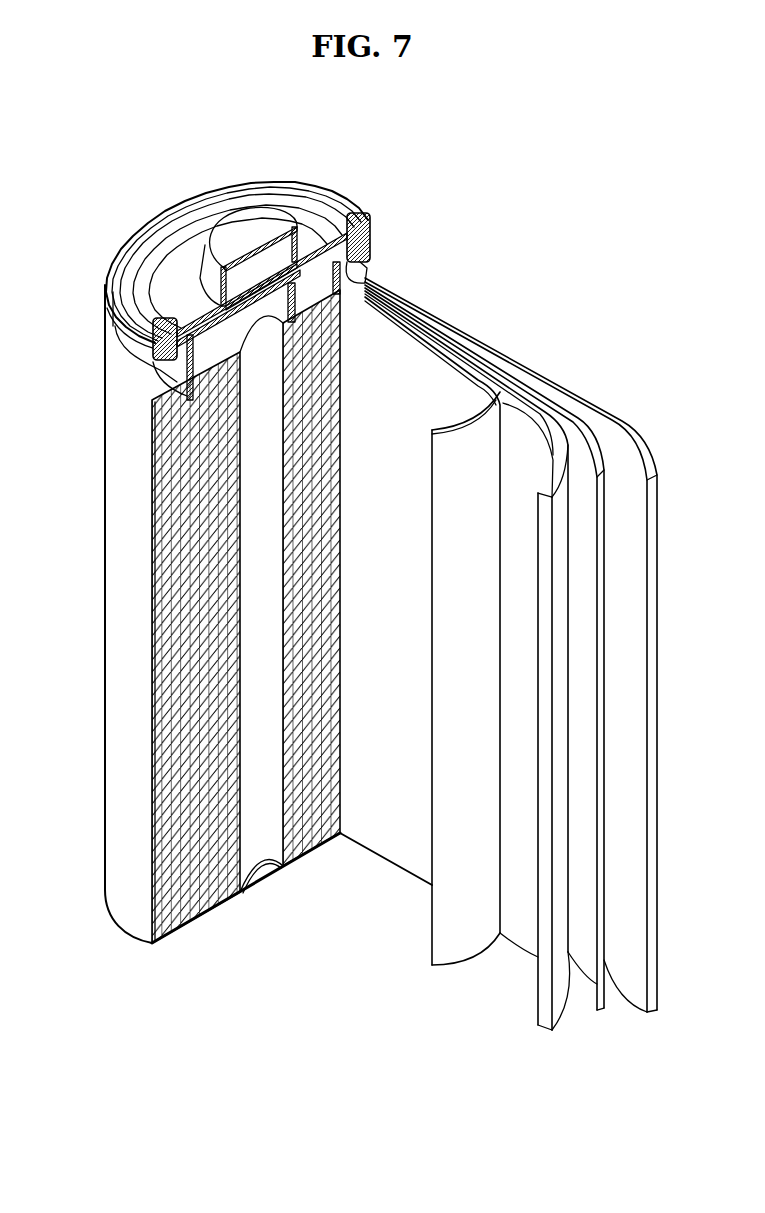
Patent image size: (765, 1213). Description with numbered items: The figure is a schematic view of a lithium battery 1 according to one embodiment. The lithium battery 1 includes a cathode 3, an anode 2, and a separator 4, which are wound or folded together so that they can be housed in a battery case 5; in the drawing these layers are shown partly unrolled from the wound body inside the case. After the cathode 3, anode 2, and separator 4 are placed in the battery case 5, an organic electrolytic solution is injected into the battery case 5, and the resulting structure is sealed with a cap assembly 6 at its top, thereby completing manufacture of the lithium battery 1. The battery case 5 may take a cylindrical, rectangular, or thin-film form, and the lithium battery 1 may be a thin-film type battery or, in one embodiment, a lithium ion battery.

The lithium battery 1 is at (519, 211).
The anode 2 is at (630, 442).
The cathode 3 is at (555, 440).
The separator 4 is at (468, 433).
The battery case 5 is at (113, 610).
The cap assembly 6 is at (235, 232).